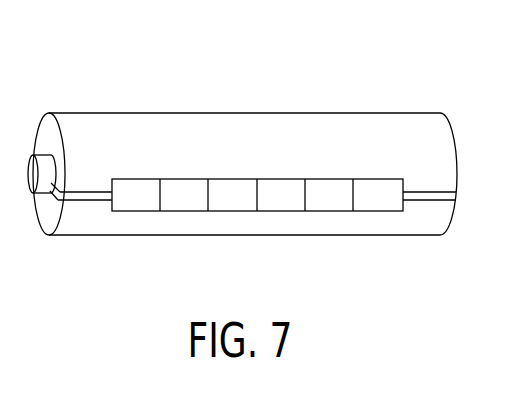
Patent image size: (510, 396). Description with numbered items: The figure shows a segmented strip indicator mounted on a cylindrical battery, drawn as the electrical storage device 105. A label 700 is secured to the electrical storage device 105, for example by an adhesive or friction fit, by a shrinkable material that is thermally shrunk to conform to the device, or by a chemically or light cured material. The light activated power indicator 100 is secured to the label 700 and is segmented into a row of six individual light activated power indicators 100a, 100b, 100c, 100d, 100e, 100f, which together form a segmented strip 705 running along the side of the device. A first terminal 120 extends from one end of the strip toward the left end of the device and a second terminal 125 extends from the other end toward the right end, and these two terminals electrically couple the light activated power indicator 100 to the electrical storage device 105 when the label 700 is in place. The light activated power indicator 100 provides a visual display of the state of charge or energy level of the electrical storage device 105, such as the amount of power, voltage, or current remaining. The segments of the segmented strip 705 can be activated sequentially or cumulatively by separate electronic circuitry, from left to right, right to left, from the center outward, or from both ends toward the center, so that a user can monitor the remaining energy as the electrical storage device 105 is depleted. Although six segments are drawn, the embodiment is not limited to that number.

The electrical storage device 105 is at (373, 93).
The label 700 is at (95, 143).
The first terminal 120 is at (100, 202).
The second terminal 125 is at (432, 202).
The light activated power indicator 100 is at (258, 176).
The segmented strip 705 is at (237, 211).
The light activated power indicator 100a is at (135, 190).
The light activated power indicator 100b is at (182, 190).
The light activated power indicator 100c is at (226, 190).
The light activated power indicator 100d is at (281, 190).
The light activated power indicator 100e is at (327, 190).
The light activated power indicator 100f is at (377, 190).